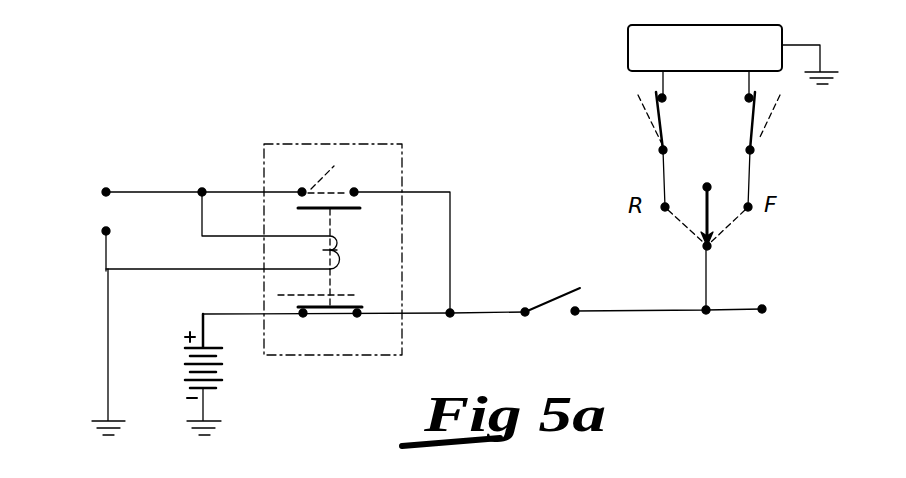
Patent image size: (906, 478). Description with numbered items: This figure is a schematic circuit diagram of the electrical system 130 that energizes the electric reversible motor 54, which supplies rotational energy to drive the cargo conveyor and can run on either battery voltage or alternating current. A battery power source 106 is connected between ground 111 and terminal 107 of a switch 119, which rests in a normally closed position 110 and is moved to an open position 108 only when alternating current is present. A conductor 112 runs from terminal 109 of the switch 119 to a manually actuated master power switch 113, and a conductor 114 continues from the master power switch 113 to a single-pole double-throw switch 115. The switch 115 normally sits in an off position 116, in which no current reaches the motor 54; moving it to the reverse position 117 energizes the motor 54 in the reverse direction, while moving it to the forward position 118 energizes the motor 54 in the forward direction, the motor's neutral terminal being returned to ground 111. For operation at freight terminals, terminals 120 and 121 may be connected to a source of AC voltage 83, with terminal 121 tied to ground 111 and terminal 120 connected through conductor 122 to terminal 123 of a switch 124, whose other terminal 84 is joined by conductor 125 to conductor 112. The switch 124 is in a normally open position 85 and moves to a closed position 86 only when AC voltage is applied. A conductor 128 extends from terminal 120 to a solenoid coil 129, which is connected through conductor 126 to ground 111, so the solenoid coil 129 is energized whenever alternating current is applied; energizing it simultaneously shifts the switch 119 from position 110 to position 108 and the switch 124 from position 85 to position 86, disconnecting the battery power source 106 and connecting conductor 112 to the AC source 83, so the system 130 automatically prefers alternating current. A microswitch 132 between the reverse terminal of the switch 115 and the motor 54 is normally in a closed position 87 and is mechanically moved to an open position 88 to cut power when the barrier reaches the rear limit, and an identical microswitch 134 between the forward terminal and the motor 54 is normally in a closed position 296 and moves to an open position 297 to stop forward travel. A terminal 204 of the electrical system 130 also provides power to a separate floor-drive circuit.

The electrical system 130 is at (380, 92).
The terminal 120 is at (107, 188).
The source of AC voltage 83 is at (111, 215).
The terminal 121 is at (102, 235).
The conductor 122 is at (215, 190).
The conductor 128 is at (201, 236).
The conductor 126 is at (185, 273).
The ground 111 is at (104, 417).
The battery power source 106 is at (222, 372).
The terminal 123 is at (305, 188).
The closed position 86 is at (326, 170).
The terminal 84 is at (356, 190).
The normally open position 85 is at (357, 209).
The solenoid coil 129 is at (338, 250).
The open position 108 is at (370, 283).
The normally closed position 110 is at (298, 306).
The terminal 107 is at (302, 318).
The terminal 109 is at (357, 318).
The switch 119 is at (333, 315).
The switch 124 is at (349, 171).
The conductor 125 is at (430, 188).
The conductor 112 is at (464, 316).
The master power switch 113 is at (553, 292).
The conductor 114 is at (712, 268).
The terminal 204 is at (762, 309).
The off position 116 is at (724, 180).
The single-pole double-throw switch 115 is at (698, 212).
The reverse position 117 is at (676, 244).
The forward position 118 is at (738, 218).
The closed position 87 is at (664, 118).
The open position 88 is at (640, 118).
The microswitch 132 is at (654, 93).
The closed position 296 is at (752, 114).
The open position 297 is at (768, 126).
The microswitch 134 is at (758, 137).
The electric reversible motor 54 is at (726, 61).